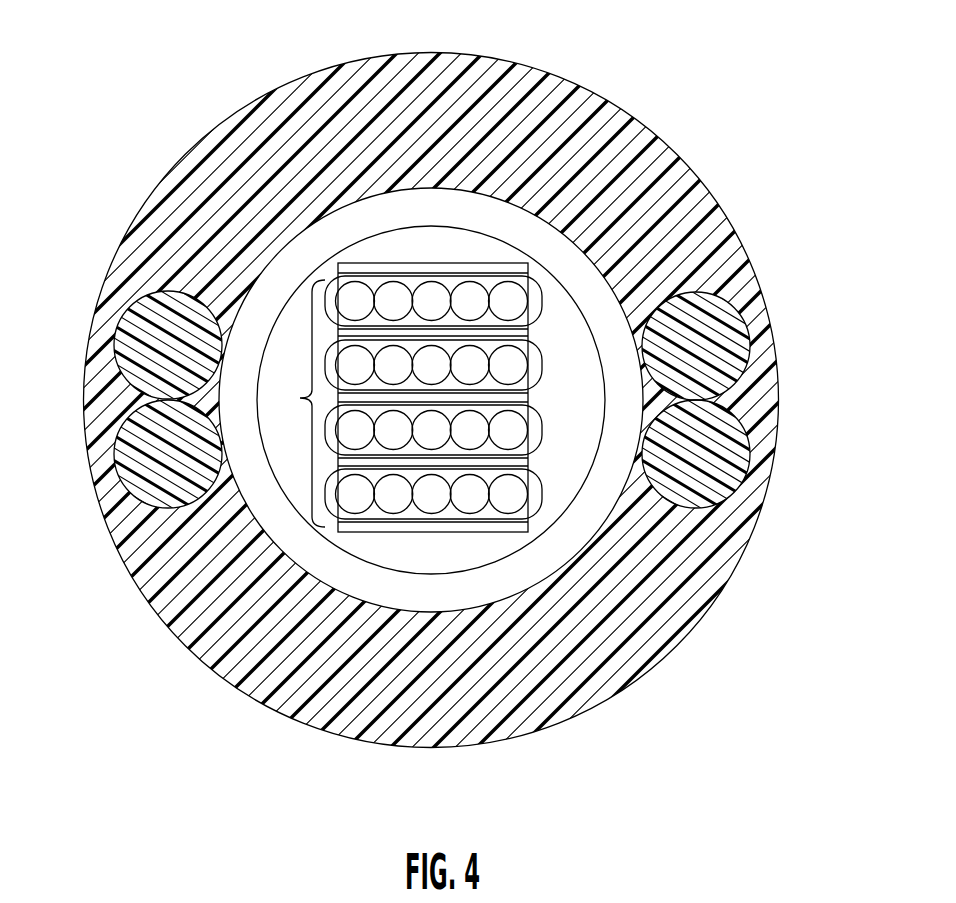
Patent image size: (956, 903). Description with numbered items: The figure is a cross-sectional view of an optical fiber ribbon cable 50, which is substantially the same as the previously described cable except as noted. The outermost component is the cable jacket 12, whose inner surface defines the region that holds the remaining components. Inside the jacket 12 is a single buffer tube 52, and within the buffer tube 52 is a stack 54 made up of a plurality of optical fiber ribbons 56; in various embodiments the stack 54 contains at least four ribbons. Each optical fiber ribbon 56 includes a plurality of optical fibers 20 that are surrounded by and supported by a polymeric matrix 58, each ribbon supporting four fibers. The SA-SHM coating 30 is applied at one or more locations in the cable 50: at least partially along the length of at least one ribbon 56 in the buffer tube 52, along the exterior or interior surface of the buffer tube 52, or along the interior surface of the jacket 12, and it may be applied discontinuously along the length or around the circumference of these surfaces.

The optical fiber ribbon cable 50 is at (128, 128).
The outer jacket 12 is at (706, 210).
The SA-SHM coating 30 is at (390, 267).
The buffer tube 52 is at (575, 527).
The stack 54 is at (300, 398).
The optical fiber ribbon 56 is at (566, 497).
The polymeric matrix 58 is at (525, 318).
The optical fibers 20 is at (432, 497).